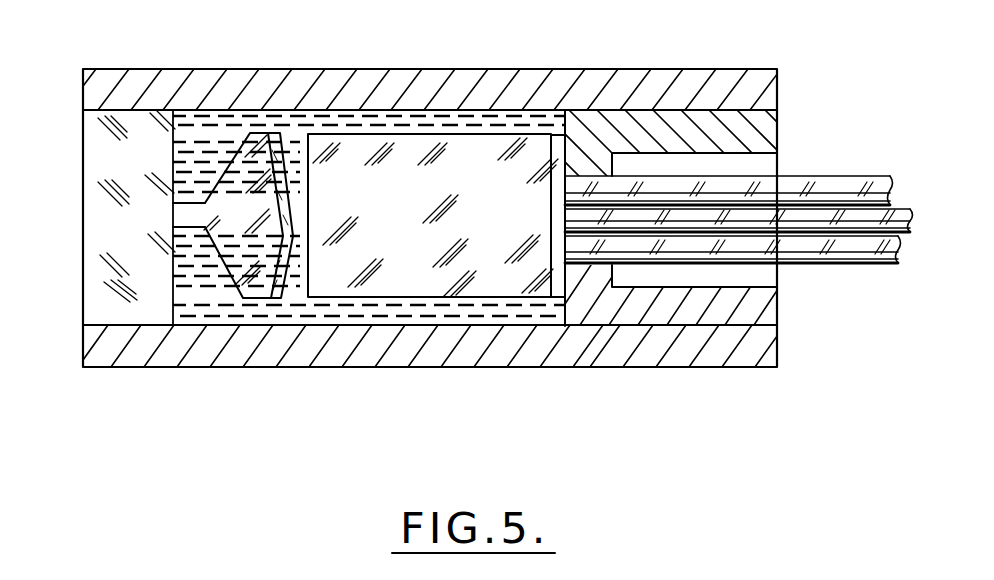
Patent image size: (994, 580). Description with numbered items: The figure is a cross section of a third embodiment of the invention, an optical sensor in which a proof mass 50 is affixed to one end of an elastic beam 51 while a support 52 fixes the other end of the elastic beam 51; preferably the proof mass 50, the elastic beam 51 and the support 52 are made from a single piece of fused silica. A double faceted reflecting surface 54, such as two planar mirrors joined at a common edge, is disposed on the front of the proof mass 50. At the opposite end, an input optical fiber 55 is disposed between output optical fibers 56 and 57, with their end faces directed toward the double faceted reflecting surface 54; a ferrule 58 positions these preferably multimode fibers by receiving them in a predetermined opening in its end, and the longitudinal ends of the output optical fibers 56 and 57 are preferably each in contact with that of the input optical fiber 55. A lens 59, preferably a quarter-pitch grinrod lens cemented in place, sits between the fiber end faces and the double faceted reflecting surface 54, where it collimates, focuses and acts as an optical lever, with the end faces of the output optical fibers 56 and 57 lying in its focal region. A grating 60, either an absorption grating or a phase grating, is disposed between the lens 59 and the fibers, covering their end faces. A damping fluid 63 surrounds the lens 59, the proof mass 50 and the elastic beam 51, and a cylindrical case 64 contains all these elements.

The proof mass 50 is at (238, 294).
The elastic beam 51 is at (196, 196).
The support 52 is at (108, 153).
The double faceted reflecting surface 54 is at (292, 235).
The input optical fiber 55 is at (912, 224).
The output optical fiber 56 is at (855, 184).
The output optical fiber 57 is at (870, 266).
The ferrule 58 is at (775, 130).
The lens 59 is at (437, 134).
The grating 60 is at (560, 153).
The damping fluid 63 is at (485, 318).
The cylindrical case 64 is at (205, 70).